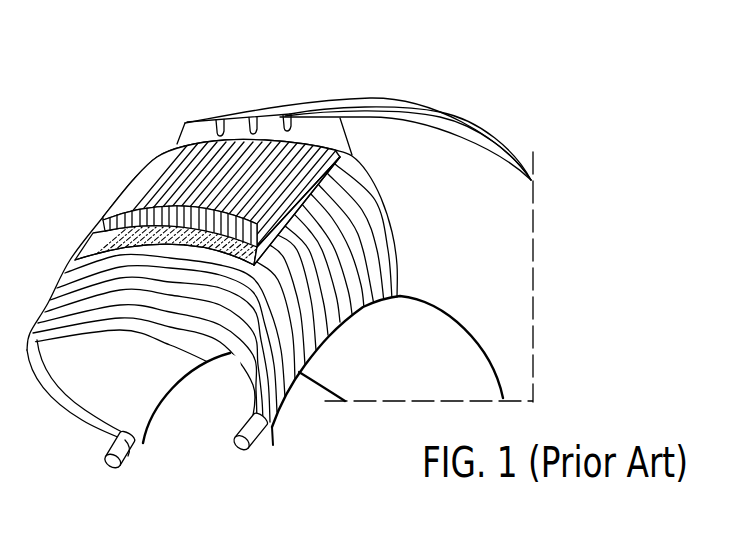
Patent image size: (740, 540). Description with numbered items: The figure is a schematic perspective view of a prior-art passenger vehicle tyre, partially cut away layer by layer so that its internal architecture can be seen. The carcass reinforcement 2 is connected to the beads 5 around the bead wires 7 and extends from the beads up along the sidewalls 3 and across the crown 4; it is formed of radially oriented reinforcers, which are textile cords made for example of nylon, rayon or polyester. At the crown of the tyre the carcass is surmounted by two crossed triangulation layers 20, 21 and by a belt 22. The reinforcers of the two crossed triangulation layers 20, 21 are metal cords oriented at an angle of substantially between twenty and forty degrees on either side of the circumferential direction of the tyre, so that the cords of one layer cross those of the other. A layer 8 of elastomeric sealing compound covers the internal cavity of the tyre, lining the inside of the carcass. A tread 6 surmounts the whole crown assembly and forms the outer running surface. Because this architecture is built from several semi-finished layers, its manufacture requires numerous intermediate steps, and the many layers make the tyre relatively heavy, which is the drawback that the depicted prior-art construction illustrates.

The carcass reinforcement 2 is at (83, 295).
The sidewalls 3 is at (495, 248).
The crown 4 is at (187, 96).
The beads 5 is at (81, 454).
The tread 6 is at (413, 118).
The bead wires 7 is at (240, 449).
The layer of elastomeric sealing compound 8 is at (70, 369).
The crossed triangulation layer 20 is at (128, 238).
The crossed triangulation layer 21 is at (140, 228).
The belt 22 is at (212, 180).